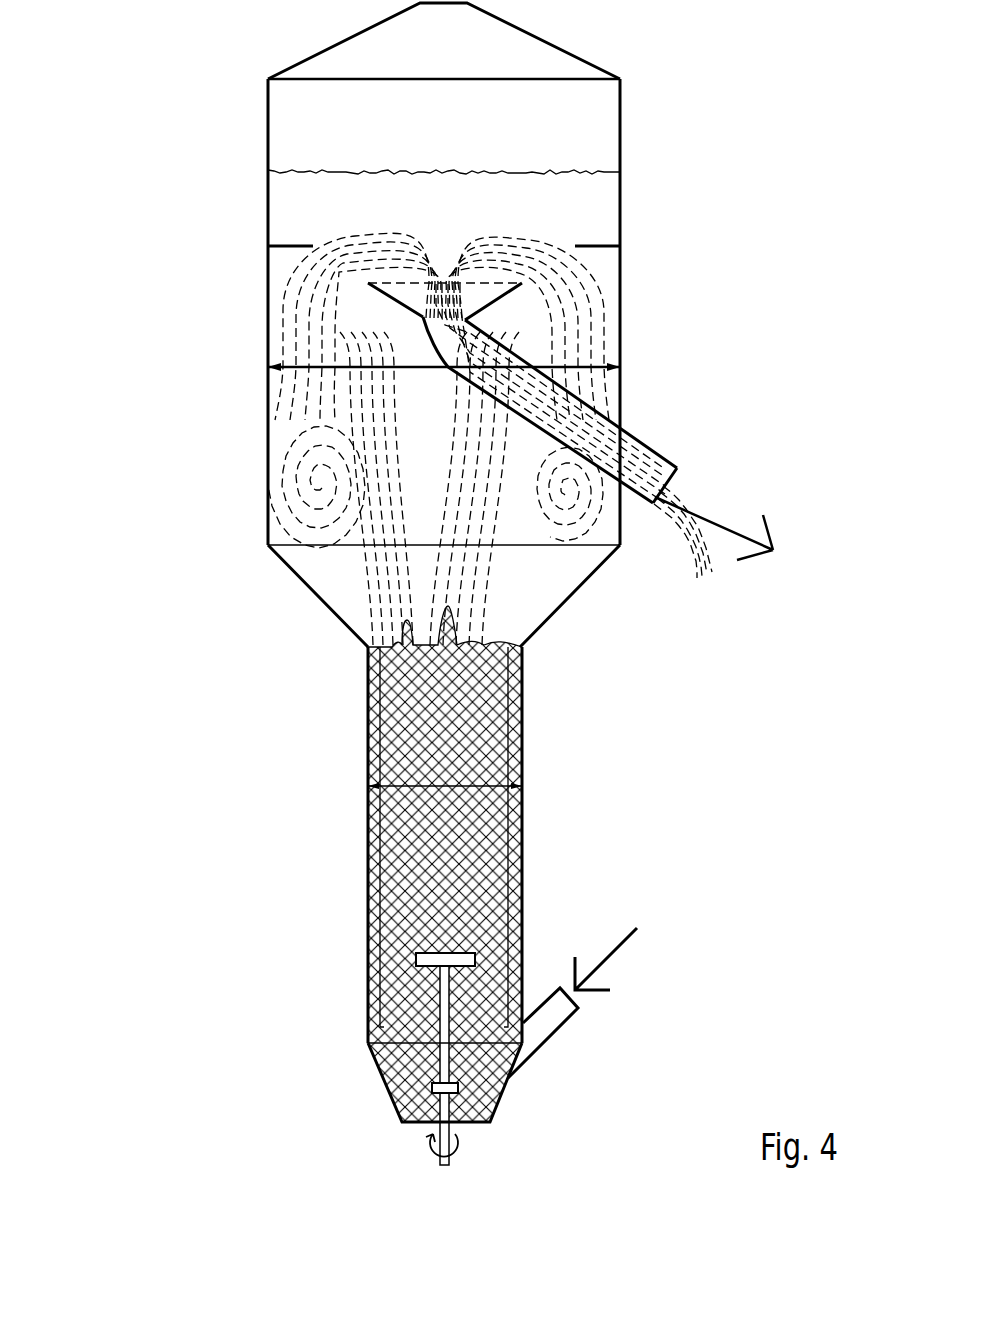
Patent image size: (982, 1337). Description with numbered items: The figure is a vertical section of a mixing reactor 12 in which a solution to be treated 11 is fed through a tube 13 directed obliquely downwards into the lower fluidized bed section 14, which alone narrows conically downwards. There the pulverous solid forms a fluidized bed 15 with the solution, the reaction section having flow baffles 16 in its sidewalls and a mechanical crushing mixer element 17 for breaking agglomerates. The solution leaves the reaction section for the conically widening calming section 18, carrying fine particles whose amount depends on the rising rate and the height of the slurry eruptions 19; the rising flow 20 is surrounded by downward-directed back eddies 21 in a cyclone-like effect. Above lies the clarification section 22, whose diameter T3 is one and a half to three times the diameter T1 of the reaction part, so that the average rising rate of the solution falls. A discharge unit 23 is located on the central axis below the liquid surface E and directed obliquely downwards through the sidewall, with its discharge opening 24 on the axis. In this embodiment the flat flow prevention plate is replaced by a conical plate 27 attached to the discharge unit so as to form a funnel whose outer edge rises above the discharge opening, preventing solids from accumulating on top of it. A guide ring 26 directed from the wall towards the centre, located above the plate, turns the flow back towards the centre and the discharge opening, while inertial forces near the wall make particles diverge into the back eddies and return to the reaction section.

The solution to be treated 11 is at (623, 948).
The mixing reactor 12 is at (190, 495).
The tube 13 is at (550, 1025).
The fluidized bed section 14 is at (358, 1041).
The fluidized bed 15 is at (477, 843).
The flow baffles 16 is at (515, 903).
The mechanical crushing mixer element 17 is at (437, 960).
The calming section 18 is at (305, 600).
The slurry eruptions 19 is at (400, 628).
The rising flow 20 is at (477, 527).
The downward-directed back eddies 21 is at (620, 378).
The clarification section 22 is at (259, 305).
The discharge unit 23 is at (647, 451).
The discharge opening 24 is at (467, 320).
The guide ring 26 is at (604, 246).
The conical flow prevention plate 27 is at (505, 293).
The liquid surface E is at (567, 172).
The diameter of the reaction part T1 is at (522, 757).
The diameter of the reactor in the clarification zone T3 is at (268, 360).